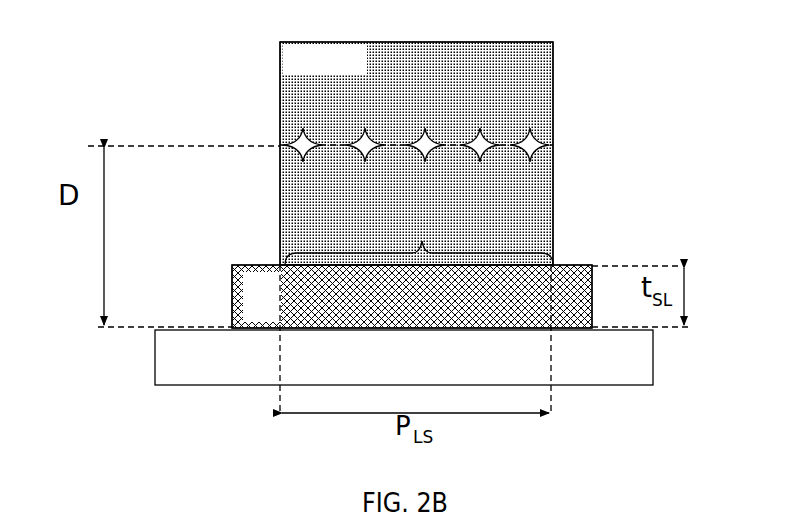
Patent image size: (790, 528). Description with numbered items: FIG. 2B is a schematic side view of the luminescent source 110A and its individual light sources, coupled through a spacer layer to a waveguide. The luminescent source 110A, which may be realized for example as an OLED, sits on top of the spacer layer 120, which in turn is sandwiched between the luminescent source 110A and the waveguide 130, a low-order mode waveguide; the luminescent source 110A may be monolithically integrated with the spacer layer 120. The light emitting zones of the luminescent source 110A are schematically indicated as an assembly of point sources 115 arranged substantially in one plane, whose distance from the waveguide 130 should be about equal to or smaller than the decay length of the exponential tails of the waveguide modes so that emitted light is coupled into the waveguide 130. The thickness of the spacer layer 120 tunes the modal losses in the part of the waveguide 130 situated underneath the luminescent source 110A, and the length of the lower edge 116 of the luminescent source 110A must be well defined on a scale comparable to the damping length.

The luminescent source 110A is at (560, 27).
The point sources 115 is at (291, 142).
The lower edge 116 is at (419, 230).
The spacer layer 120 is at (230, 296).
The waveguide 130 is at (153, 352).